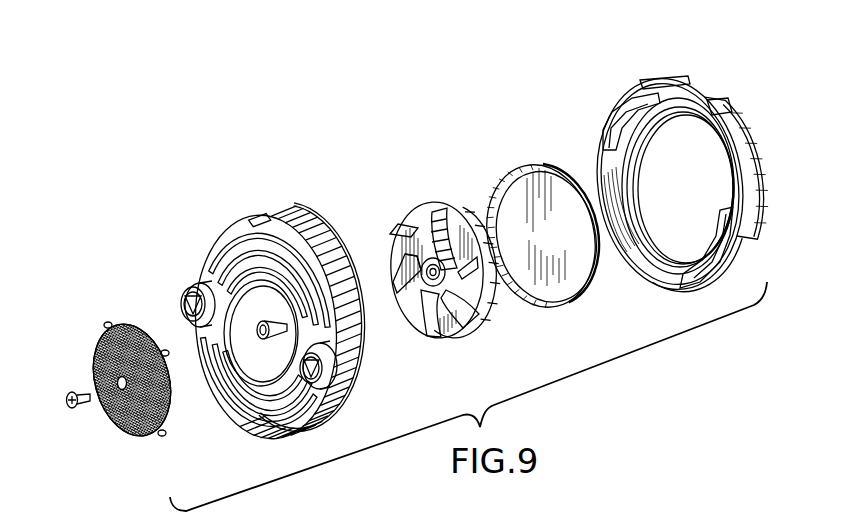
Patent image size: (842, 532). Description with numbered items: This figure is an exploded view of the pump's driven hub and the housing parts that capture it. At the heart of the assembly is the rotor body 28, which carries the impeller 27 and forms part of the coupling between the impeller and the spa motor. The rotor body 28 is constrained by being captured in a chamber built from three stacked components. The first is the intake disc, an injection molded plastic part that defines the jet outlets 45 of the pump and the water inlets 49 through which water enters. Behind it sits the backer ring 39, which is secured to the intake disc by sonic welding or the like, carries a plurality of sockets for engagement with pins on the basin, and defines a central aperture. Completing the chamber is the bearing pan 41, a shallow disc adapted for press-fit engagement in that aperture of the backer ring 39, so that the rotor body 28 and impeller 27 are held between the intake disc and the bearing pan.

The jet outlets 45 is at (163, 298).
The water inlets 49 is at (212, 237).
The impeller 27 is at (393, 211).
The rotor body 28 is at (417, 217).
The bearing pan 41 is at (528, 192).
The backer ring 39 is at (673, 65).